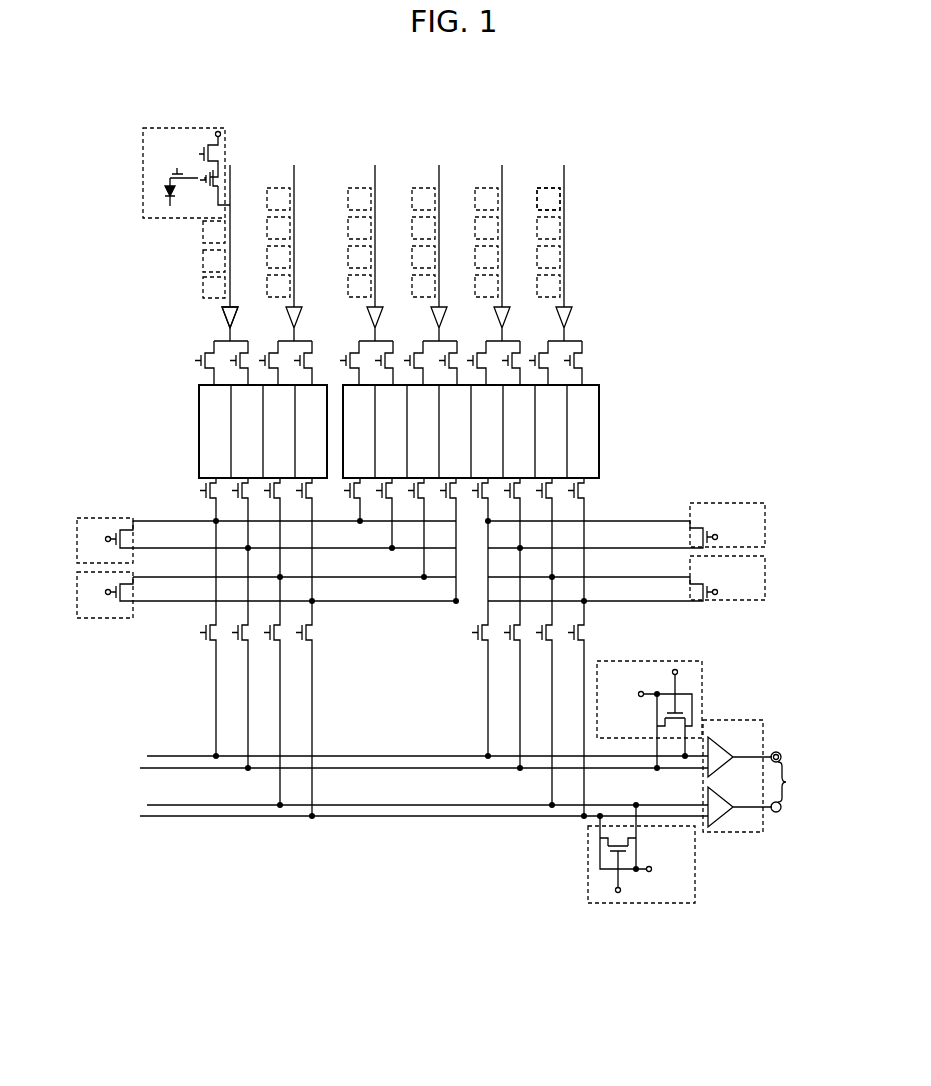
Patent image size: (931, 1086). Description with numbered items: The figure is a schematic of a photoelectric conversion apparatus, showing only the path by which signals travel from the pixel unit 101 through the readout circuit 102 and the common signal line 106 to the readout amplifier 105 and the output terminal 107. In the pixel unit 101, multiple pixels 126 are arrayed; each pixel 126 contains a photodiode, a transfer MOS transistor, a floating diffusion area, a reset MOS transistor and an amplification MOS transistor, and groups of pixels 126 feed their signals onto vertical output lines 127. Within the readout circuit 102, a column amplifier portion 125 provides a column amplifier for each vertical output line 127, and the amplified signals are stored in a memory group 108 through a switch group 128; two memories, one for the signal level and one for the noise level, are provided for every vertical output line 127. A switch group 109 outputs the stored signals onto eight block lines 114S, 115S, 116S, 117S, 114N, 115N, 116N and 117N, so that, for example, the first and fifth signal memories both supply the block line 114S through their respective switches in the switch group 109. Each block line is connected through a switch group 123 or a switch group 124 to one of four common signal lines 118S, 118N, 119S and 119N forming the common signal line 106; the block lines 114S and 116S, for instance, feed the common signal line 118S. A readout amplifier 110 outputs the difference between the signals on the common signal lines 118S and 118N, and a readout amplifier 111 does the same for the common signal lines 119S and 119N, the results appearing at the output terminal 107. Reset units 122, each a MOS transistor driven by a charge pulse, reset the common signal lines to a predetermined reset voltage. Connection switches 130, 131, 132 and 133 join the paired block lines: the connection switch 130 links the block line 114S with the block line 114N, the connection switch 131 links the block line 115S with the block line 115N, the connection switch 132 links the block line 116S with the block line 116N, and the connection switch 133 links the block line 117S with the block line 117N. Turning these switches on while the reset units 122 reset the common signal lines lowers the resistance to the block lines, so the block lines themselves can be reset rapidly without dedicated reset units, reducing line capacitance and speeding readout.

The pixel unit 101 is at (59, 168).
The readout circuit 102 is at (59, 360).
The readout amplifier 105 is at (764, 832).
The common signal line 106 is at (110, 752).
The output terminal 107 is at (800, 782).
The memory group 108 is at (190, 386).
The switch group 109 is at (190, 482).
The readout amplifier 110 is at (722, 736).
The readout amplifier 111 is at (718, 827).
The block line 114S is at (150, 518).
The block line 114N is at (148, 545).
The block line 115S is at (164, 577).
The block line 115N is at (148, 605).
The block line 116S is at (626, 520).
The block line 116N is at (666, 546).
The block line 117S is at (616, 577).
The block line 117N is at (608, 603).
The common signal line 118S is at (354, 754).
The common signal line 118N is at (416, 766).
The common signal line 119S is at (350, 807).
The common signal line 119N is at (416, 818).
The reset unit 122 is at (664, 661).
The switch group 123 is at (199, 643).
The switch group 124 is at (471, 643).
The column amplifier portion 125 is at (204, 312).
The pixel 126 is at (205, 293).
The vertical output line 127 is at (566, 248).
The switch group 128 is at (190, 343).
The connection switch 130 is at (86, 515).
The connection switch 131 is at (86, 620).
The connection switch 132 is at (739, 502).
The connection switch 133 is at (739, 602).